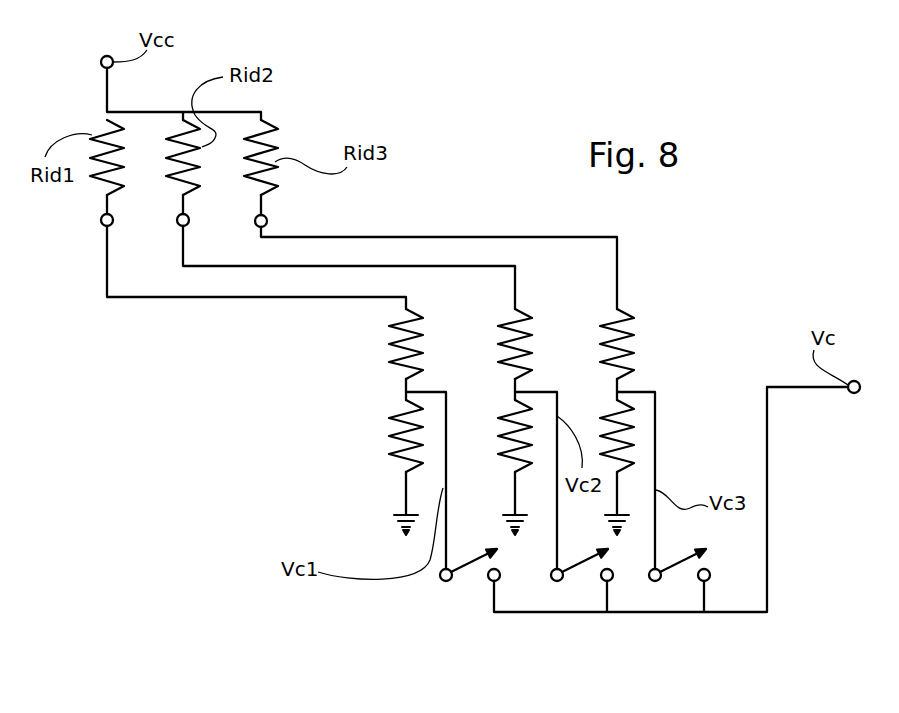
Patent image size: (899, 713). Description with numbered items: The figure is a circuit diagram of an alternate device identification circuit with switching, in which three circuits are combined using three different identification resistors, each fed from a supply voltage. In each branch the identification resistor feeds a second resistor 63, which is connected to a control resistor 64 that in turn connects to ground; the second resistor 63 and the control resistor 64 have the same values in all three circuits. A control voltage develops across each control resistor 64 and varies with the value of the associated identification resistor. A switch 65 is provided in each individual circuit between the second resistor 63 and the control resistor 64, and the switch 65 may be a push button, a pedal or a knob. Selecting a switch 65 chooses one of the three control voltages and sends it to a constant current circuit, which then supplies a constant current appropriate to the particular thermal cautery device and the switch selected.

The second resistor 63 is at (389, 343).
The control resistor 64 is at (389, 434).
The switch 65 is at (463, 580).